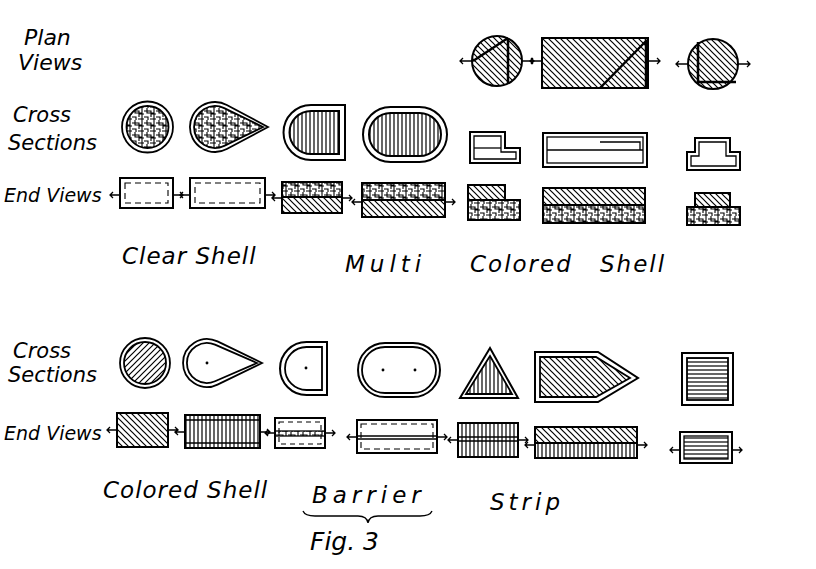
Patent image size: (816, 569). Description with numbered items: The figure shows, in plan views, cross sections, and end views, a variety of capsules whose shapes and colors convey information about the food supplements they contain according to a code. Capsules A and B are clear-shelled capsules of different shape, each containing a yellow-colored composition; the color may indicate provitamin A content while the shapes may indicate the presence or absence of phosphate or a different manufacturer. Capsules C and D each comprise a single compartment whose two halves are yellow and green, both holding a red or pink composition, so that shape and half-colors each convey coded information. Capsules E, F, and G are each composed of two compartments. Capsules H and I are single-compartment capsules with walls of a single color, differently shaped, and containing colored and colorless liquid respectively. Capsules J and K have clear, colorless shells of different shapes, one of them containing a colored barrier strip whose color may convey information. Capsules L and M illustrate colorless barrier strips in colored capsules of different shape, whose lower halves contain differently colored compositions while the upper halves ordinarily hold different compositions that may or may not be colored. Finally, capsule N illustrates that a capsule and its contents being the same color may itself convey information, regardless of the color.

The clear-shelled capsule A is at (146, 173).
The clear-shelled capsule B is at (227, 173).
The single-compartment capsule C is at (312, 176).
The single-compartment capsule D is at (403, 179).
The two-compartment capsule E is at (497, 145).
The two-compartment capsule F is at (595, 146).
The two-compartment capsule G is at (713, 149).
The single-compartment capsule H is at (142, 409).
The single-compartment capsule I is at (222, 409).
The clear colorless-shell capsule J is at (300, 412).
The clear colorless-shell capsule K is at (397, 414).
The colored capsule with colorless barrier strip L is at (488, 419).
The colored capsule with colorless barrier strip M is at (586, 422).
The same-color capsule N is at (706, 424).